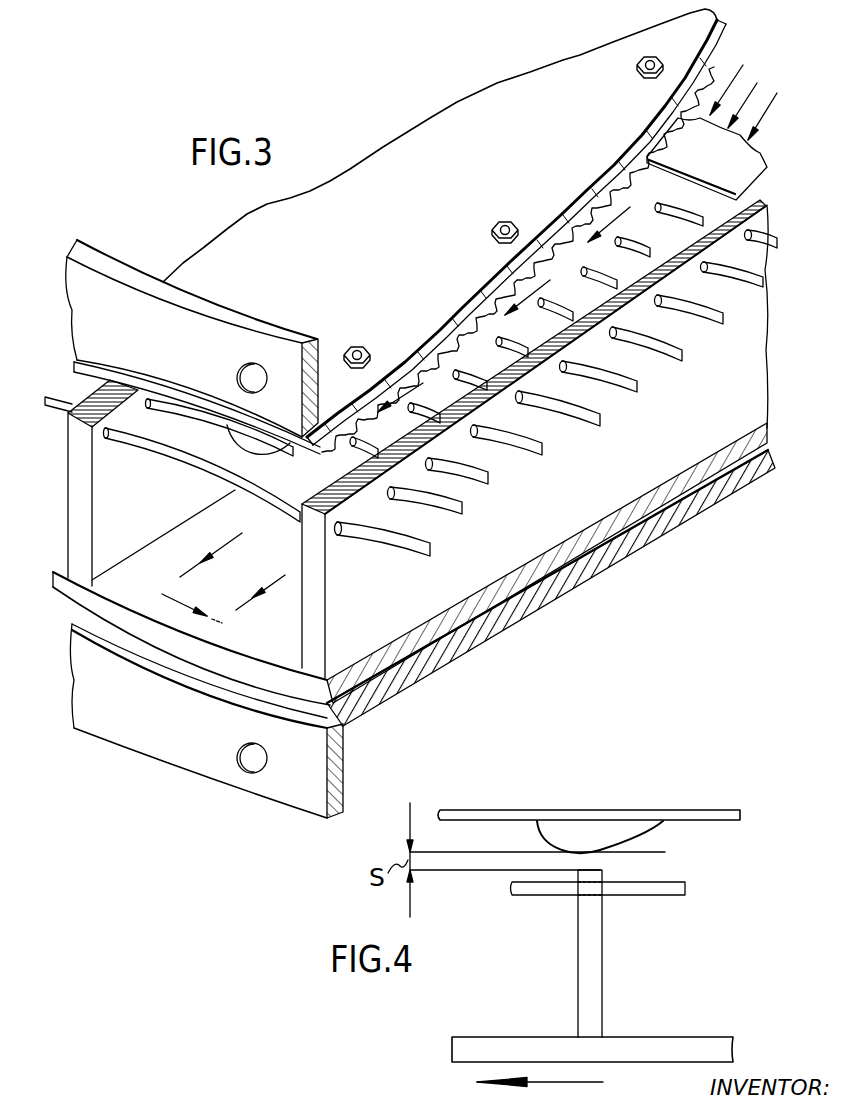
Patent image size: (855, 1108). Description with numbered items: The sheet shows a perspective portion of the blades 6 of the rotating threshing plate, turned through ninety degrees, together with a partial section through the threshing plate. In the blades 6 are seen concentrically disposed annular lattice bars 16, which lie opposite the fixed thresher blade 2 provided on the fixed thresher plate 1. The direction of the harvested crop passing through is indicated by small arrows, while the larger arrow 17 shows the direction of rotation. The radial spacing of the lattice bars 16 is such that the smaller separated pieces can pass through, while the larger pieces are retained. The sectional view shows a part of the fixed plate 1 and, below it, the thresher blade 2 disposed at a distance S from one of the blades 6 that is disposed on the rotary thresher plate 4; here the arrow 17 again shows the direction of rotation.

In FIG. 3, the fixed thresher plate 1 is at (423, 140).
In FIG. 4, the fixed thresher plate 1 is at (493, 813).
In FIG. 3, the fixed thresher blade 2 is at (612, 178).
In FIG. 4, the fixed thresher blade 2 is at (640, 827).
In FIG. 3, the rotary thresher plate 4 is at (603, 533).
In FIG. 4, the rotary thresher plate 4 is at (658, 1047).
In FIG. 3, the blade 6 is at (78, 523).
In FIG. 4, the blade 6 is at (593, 990).
In FIG. 3, the lattice bar 16 is at (597, 370).
In FIG. 4, the lattice bar 16 is at (657, 888).
In FIG. 3, the arrow 17 is at (233, 634).
In FIG. 4, the arrow 17 is at (587, 1082).